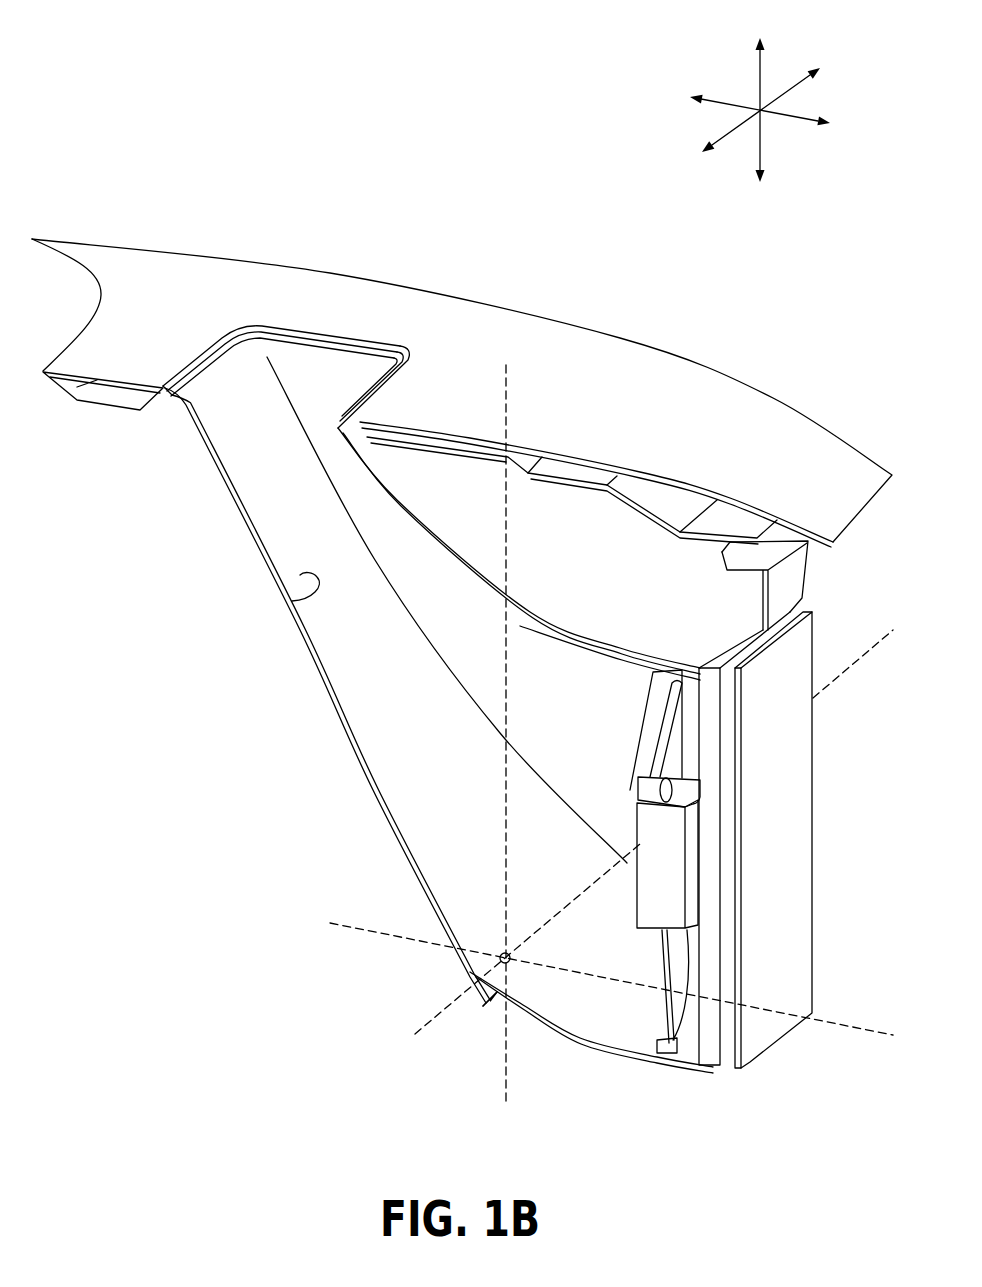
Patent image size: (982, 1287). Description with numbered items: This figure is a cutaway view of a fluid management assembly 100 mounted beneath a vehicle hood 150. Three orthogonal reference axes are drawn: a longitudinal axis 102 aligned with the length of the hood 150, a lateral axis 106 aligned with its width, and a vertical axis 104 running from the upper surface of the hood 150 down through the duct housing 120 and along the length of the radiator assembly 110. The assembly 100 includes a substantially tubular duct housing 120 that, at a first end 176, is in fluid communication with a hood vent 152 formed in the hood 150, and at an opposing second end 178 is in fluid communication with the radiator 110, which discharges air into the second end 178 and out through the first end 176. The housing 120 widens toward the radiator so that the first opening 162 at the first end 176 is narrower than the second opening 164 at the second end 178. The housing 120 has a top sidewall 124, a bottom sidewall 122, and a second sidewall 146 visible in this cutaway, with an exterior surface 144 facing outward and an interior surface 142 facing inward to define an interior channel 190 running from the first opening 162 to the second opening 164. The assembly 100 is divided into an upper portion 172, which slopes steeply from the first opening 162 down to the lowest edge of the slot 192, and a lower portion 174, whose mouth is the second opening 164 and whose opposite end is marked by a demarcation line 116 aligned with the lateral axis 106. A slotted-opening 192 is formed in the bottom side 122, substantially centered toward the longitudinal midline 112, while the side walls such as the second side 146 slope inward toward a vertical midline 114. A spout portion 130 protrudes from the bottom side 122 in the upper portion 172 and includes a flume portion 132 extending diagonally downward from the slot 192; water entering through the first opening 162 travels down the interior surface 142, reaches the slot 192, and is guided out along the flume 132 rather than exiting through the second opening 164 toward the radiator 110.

The fluid management assembly 100 is at (516, 205).
The longitudinal axis 102 is at (788, 120).
The vertical axis 104 is at (758, 77).
The lateral axis 106 is at (788, 80).
The radiator assembly 110 is at (787, 830).
The longitudinal midline 112 is at (369, 927).
The vertical midline 114 is at (508, 408).
The demarcation line 116 is at (448, 1010).
The duct housing 120 is at (200, 668).
The bottom sidewall 122 is at (246, 525).
The top sidewall 124 is at (430, 502).
The spout portion 130 is at (431, 983).
The flume portion 132 is at (478, 1002).
The interior surface 142 is at (292, 601).
The exterior surface 144 is at (535, 565).
The second sidewall 146 is at (600, 645).
The vehicle hood 150 is at (674, 380).
The hood vent 152 is at (498, 386).
The first opening 162 is at (316, 370).
The second opening 164 is at (698, 993).
The upper portion 172 is at (195, 490).
The lower portion 174 is at (566, 1055).
The first end 176 is at (162, 418).
The second end 178 is at (624, 1085).
The interior channel 190 is at (399, 742).
The slotted-opening 192 is at (484, 932).